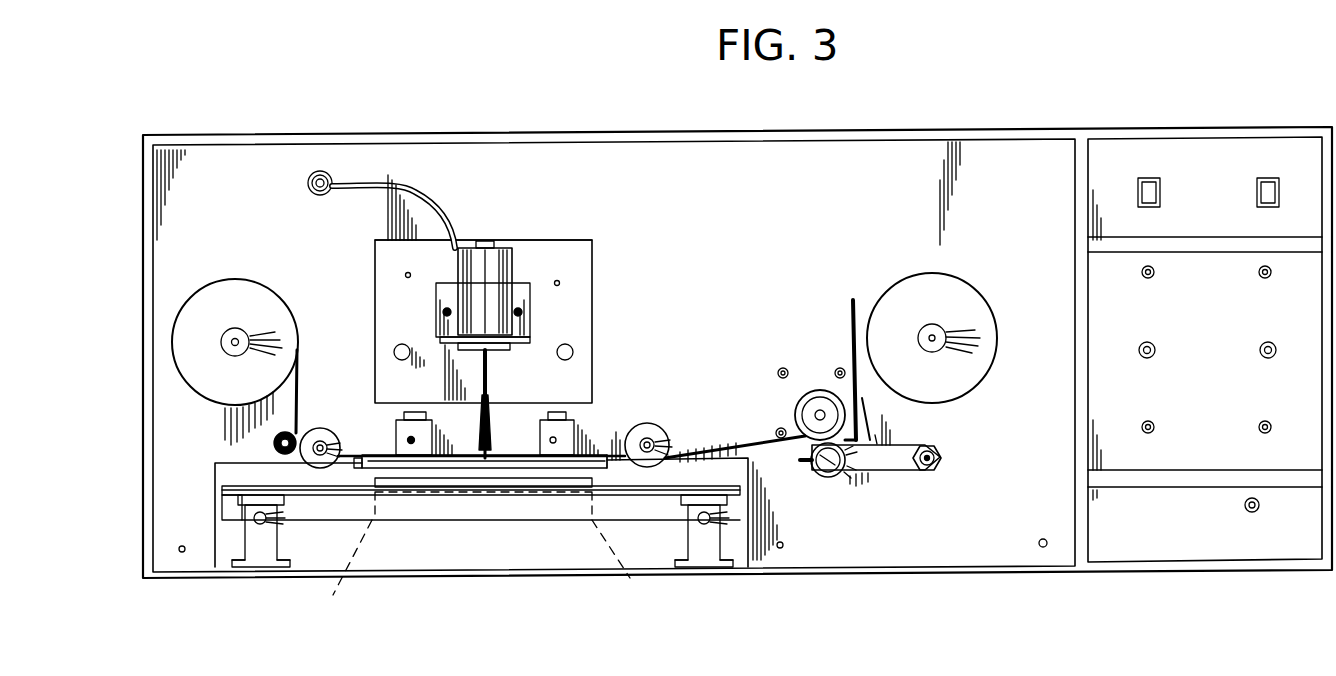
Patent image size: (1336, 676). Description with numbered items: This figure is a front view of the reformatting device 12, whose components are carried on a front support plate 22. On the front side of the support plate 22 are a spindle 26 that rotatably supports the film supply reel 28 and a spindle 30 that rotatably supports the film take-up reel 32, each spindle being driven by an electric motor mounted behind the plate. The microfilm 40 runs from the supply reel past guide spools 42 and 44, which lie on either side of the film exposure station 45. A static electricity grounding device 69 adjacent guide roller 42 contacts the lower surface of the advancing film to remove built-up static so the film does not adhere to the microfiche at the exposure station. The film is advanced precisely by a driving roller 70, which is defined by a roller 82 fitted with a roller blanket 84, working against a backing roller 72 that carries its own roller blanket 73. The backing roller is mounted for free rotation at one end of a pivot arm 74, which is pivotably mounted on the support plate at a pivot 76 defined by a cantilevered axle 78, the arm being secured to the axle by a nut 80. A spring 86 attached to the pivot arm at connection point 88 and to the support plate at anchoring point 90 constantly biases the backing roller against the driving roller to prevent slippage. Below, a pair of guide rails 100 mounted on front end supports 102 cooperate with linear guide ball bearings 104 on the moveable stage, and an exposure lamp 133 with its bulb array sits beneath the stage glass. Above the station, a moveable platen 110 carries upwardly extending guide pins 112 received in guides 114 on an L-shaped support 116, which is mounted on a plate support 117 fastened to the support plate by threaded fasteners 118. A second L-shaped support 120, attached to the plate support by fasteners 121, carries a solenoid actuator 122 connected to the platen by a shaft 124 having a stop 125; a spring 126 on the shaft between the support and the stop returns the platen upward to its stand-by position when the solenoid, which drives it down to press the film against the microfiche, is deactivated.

The reformatting device 12 is at (243, 118).
The front support plate 22 is at (200, 170).
The spindle 26 is at (237, 337).
The film supply reel 28 is at (283, 302).
The spindle 30 is at (950, 345).
The film take-up reel 32 is at (982, 312).
The film strip 40 is at (730, 452).
The guide spool 42 is at (323, 428).
The guide spool 44 is at (660, 440).
The film exposure station 45 is at (594, 302).
The static electricity grounding device 69 is at (274, 444).
The driving roller 70 is at (810, 390).
The backing roller 72 is at (820, 476).
The roller blanket 73 is at (828, 480).
The pivot arm 74 is at (880, 470).
The pivot 76 is at (942, 458).
The axle 78 is at (925, 470).
The nut 80 is at (930, 450).
The roller 82 is at (802, 412).
The roller blanket 84 is at (825, 392).
The spring 86 is at (862, 398).
The connection point 88 is at (878, 436).
The anchoring point 90 is at (856, 340).
The guide rails 100 is at (700, 528).
The front end supports 102 is at (715, 558).
The linear guide ball bearings 104 is at (690, 512).
The moveable platen 110 is at (606, 452).
The guide pins 112 is at (558, 420).
The guides 114 is at (548, 438).
The L-shaped support 116 is at (380, 453).
The plate support 117 is at (377, 252).
The threaded fasteners 118 is at (396, 350).
The L-shaped support 120 is at (447, 335).
The fasteners 121 is at (516, 309).
The solenoid actuator 122 is at (508, 282).
The shaft 124 is at (488, 360).
The stop 125 is at (490, 392).
The spring 126 is at (470, 444).
The exposure lamp 133 is at (438, 592).